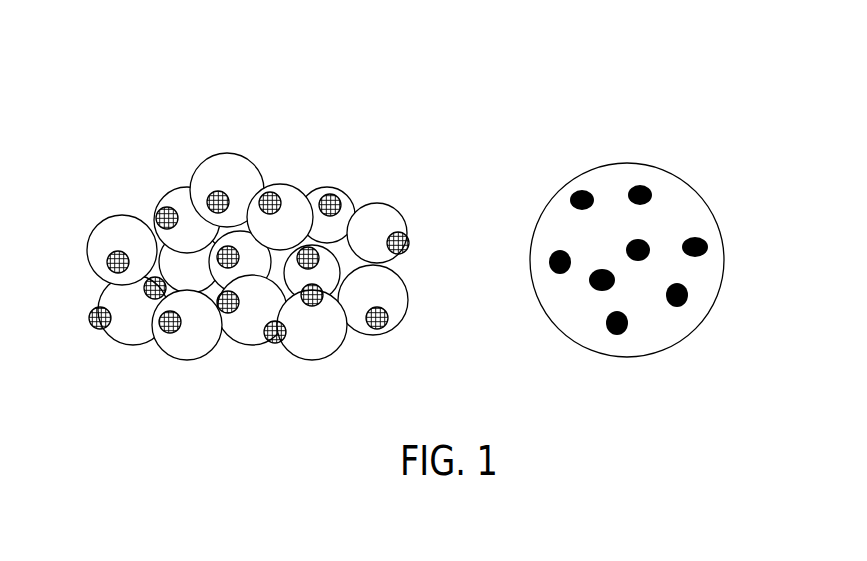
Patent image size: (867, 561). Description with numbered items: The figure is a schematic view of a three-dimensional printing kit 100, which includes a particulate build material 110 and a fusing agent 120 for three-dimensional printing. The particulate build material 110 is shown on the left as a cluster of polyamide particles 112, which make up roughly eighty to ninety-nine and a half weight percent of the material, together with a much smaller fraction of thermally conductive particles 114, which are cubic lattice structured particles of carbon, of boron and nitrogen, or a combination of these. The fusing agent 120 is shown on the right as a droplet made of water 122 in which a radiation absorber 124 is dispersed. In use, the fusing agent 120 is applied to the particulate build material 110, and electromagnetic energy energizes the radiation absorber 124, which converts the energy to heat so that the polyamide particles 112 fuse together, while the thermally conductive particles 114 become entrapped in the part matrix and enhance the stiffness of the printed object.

The three-dimensional printing kit 100 is at (158, 86).
The particulate build material 110 is at (262, 263).
The polyamide particles 112 is at (372, 217).
The thermally conductive particles 114 is at (277, 196).
The fusing agent 120 is at (653, 271).
The water 122 is at (688, 217).
The radiation absorber 124 is at (646, 192).